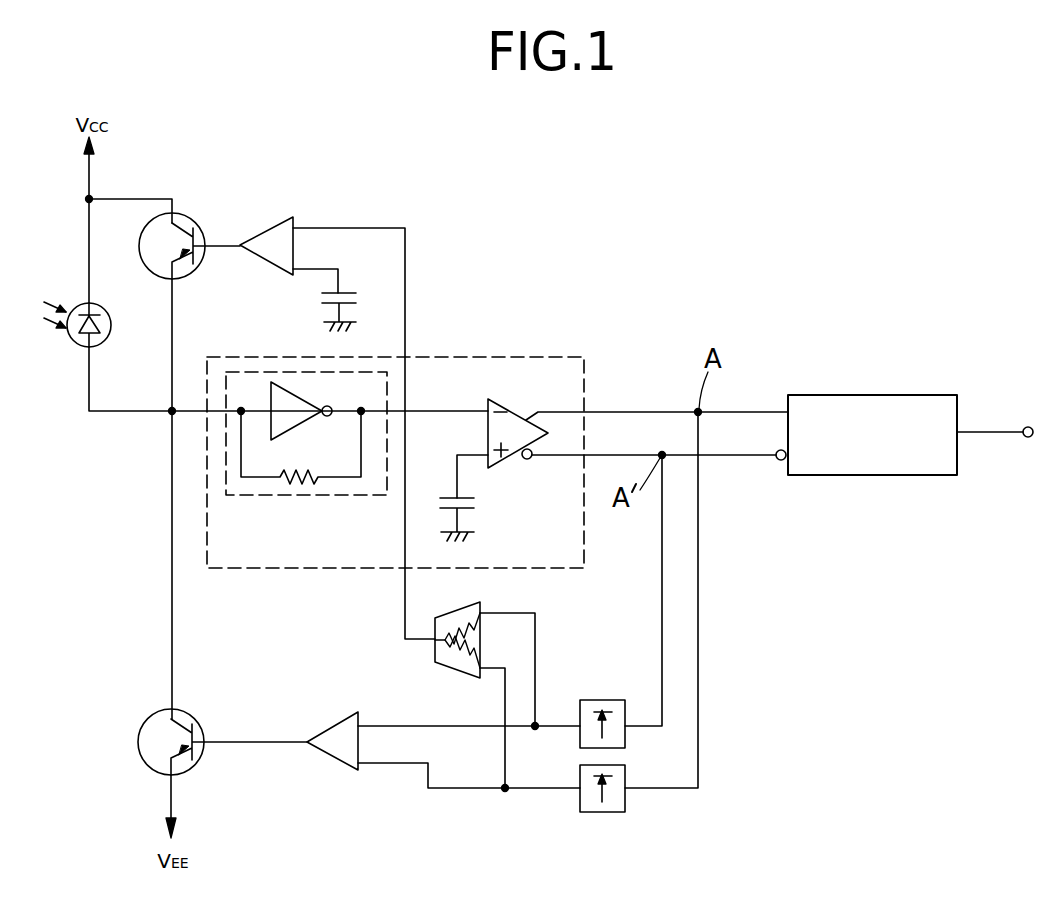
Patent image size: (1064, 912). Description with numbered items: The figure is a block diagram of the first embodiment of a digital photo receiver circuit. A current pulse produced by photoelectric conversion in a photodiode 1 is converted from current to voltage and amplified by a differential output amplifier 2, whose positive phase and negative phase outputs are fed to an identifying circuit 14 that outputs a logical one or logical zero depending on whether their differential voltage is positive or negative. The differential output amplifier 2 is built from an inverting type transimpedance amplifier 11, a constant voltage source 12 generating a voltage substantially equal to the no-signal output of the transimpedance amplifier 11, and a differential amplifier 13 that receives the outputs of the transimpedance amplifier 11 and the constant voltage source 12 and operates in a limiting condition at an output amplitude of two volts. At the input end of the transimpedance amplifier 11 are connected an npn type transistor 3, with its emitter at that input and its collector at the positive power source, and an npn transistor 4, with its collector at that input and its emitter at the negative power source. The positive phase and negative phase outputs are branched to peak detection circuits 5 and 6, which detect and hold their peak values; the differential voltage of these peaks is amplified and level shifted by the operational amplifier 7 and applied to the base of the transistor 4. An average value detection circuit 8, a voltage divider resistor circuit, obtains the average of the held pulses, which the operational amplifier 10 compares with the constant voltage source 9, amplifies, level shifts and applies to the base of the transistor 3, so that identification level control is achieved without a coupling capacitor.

The photodiode 1 is at (100, 306).
The differential output amplifier 2 is at (551, 356).
The npn type transistor 3 is at (187, 221).
The npn transistor 4 is at (193, 723).
The peak detection circuit 5 is at (612, 812).
The peak detection circuit 6 is at (610, 700).
The operational amplifier 7 is at (330, 726).
The average value detection circuit 8 is at (440, 662).
The constant voltage source 9 is at (347, 291).
The operational amplifier 10 is at (296, 221).
The inverting type transimpedance amplifier 11 is at (349, 496).
The constant voltage source 12 is at (478, 509).
The differential amplifier 13 is at (513, 408).
The identifying circuit 14 is at (852, 395).